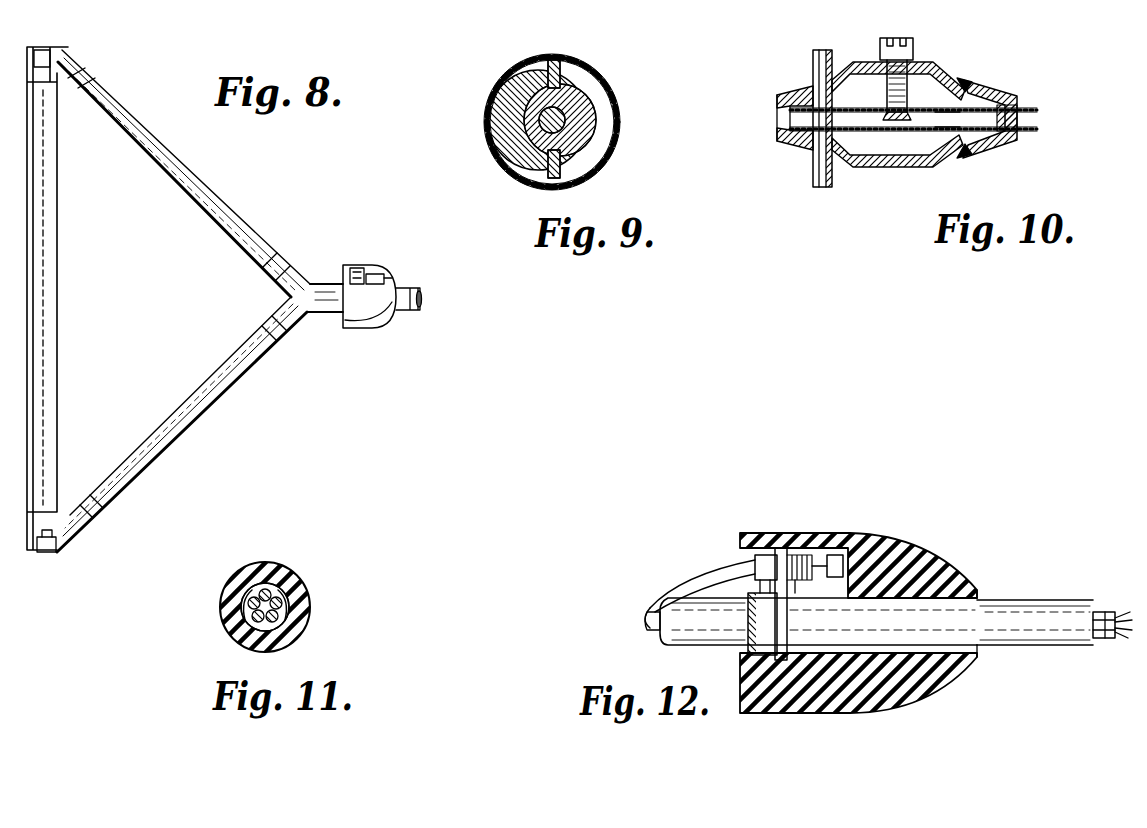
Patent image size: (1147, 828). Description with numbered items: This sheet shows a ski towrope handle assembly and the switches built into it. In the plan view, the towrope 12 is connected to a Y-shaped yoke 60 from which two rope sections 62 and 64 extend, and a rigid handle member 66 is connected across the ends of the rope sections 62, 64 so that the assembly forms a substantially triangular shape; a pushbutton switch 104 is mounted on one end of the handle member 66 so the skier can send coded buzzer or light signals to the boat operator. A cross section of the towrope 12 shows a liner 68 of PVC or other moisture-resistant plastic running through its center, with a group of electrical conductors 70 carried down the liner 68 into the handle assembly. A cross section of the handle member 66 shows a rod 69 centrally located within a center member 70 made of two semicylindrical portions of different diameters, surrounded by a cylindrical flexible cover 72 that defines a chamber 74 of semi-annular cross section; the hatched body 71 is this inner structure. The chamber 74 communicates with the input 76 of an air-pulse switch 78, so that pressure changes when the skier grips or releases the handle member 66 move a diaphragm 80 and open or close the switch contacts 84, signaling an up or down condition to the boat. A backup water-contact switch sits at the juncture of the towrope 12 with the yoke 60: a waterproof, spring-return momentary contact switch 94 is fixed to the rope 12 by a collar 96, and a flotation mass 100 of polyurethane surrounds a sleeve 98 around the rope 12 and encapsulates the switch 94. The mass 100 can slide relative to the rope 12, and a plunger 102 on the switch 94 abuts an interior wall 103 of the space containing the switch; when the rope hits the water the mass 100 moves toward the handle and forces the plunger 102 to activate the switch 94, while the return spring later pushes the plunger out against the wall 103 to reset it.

In FIG. 8, the towrope 12 is at (412, 312).
In FIG. 11, the towrope 12 is at (308, 595).
In FIG. 12, the towrope 12 is at (997, 606).
In FIG. 8, the Y-shaped yoke 60 is at (298, 276).
In FIG. 8, the rope section 62 is at (188, 182).
In FIG. 8, the rope section 64 is at (238, 372).
In FIG. 8, the rigid handle member 66 is at (59, 305).
In FIG. 11, the liner 68 is at (276, 585).
In FIG. 12, the liner 68 is at (1108, 612).
In FIG. 9, the rod 69 is at (562, 118).
In FIG. 11, the center member 70 is at (306, 620).
In FIG. 12, the center member 70 is at (1120, 640).
In FIG. 9, the insert body 71 is at (520, 167).
In FIG. 9, the flexible cover 72 is at (621, 143).
In FIG. 9, the chamber 74 is at (577, 77).
In FIG. 10, the input 76 is at (833, 190).
In FIG. 8, the air-pulse switch 78 is at (42, 52).
In FIG. 10, the air-pulse switch 78 is at (942, 65).
In FIG. 10, the diaphragm 80 is at (933, 135).
In FIG. 10, the switch contact 84 is at (896, 126).
In FIG. 8, the momentary contact switch 94 is at (357, 268).
In FIG. 12, the momentary contact switch 94 is at (765, 555).
In FIG. 12, the collar 96 is at (788, 634).
In FIG. 12, the sleeve 98 is at (981, 660).
In FIG. 8, the mass 100 is at (359, 329).
In FIG. 12, the mass 100 is at (915, 560).
In FIG. 8, the plunger 102 is at (376, 274).
In FIG. 12, the plunger 102 is at (836, 555).
In FIG. 8, the interior wall 103 is at (390, 280).
In FIG. 12, the interior wall 103 is at (853, 592).
In FIG. 8, the pushbutton switch 104 is at (47, 553).